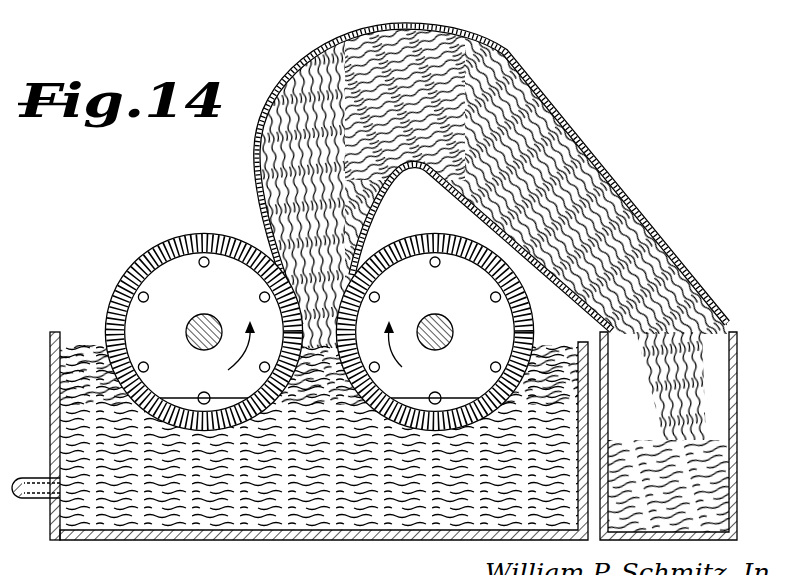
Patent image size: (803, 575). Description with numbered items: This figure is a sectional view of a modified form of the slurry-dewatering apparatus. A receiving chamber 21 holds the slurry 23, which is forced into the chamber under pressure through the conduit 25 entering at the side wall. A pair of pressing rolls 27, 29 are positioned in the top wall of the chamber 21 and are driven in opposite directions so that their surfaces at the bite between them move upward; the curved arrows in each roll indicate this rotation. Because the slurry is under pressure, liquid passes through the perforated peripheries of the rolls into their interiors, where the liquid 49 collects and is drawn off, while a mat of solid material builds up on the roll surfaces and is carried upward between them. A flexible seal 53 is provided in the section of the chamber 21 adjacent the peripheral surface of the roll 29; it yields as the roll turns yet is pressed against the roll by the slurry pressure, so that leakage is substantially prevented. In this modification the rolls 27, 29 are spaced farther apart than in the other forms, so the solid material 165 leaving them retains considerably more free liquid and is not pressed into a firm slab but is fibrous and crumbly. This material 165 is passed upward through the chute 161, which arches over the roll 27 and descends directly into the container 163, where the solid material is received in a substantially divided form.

The chute 161 is at (254, 151).
The solid material 165 is at (275, 185).
The pressing roll 29 is at (168, 260).
The pressing roll 27 is at (412, 257).
The seal 53 is at (72, 332).
The conduit 25 is at (35, 477).
The liquid 49 is at (457, 395).
The container 163 is at (737, 350).
The slurry 23 is at (307, 512).
The receiving chamber 21 is at (413, 537).